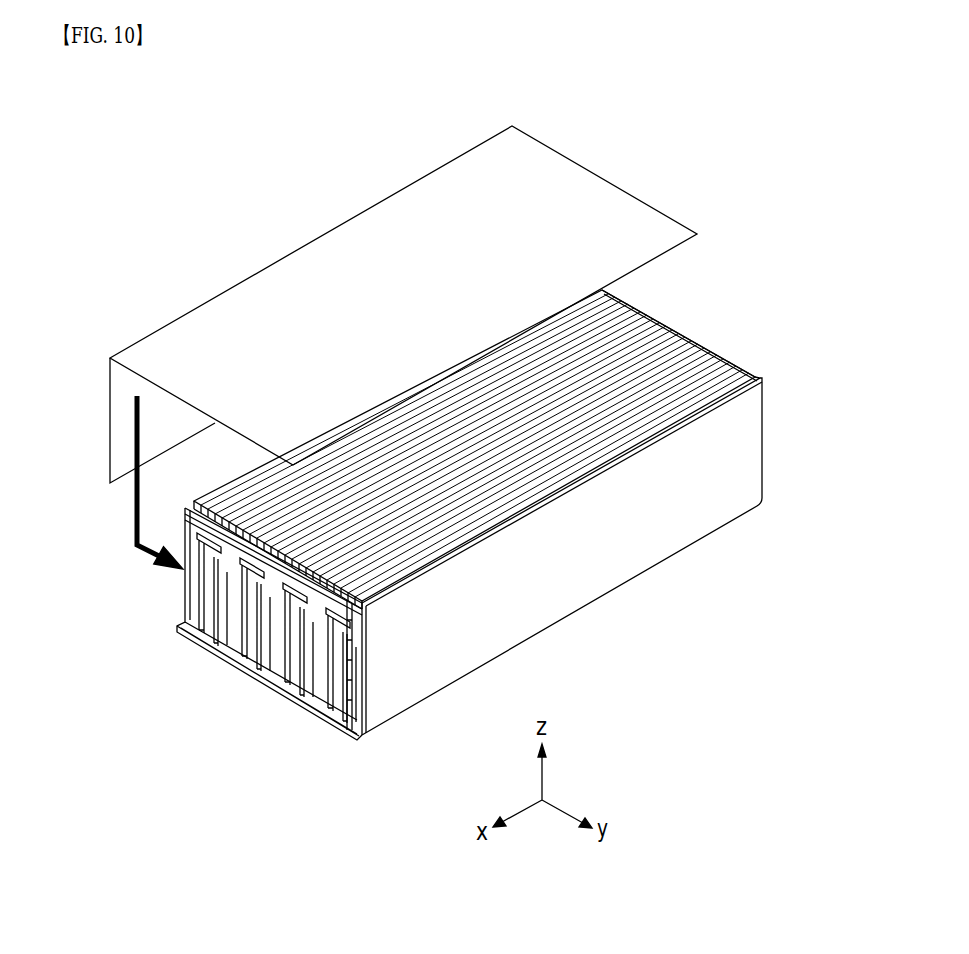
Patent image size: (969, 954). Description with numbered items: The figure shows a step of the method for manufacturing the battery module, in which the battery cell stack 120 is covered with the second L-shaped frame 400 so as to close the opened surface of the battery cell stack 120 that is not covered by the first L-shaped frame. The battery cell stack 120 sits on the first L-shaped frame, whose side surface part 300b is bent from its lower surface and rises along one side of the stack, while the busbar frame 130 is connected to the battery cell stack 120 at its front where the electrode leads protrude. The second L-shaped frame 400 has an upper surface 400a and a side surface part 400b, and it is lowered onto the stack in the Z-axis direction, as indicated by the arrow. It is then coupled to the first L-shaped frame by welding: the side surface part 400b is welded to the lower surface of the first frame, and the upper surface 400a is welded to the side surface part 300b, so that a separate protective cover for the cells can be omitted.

The second L-shaped frame 400 is at (198, 241).
The upper surface 400a is at (208, 332).
The side surface part 400b is at (120, 414).
The battery cell stack 120 is at (683, 351).
The side surface part 300b is at (537, 583).
The busbar frame 130 is at (254, 664).